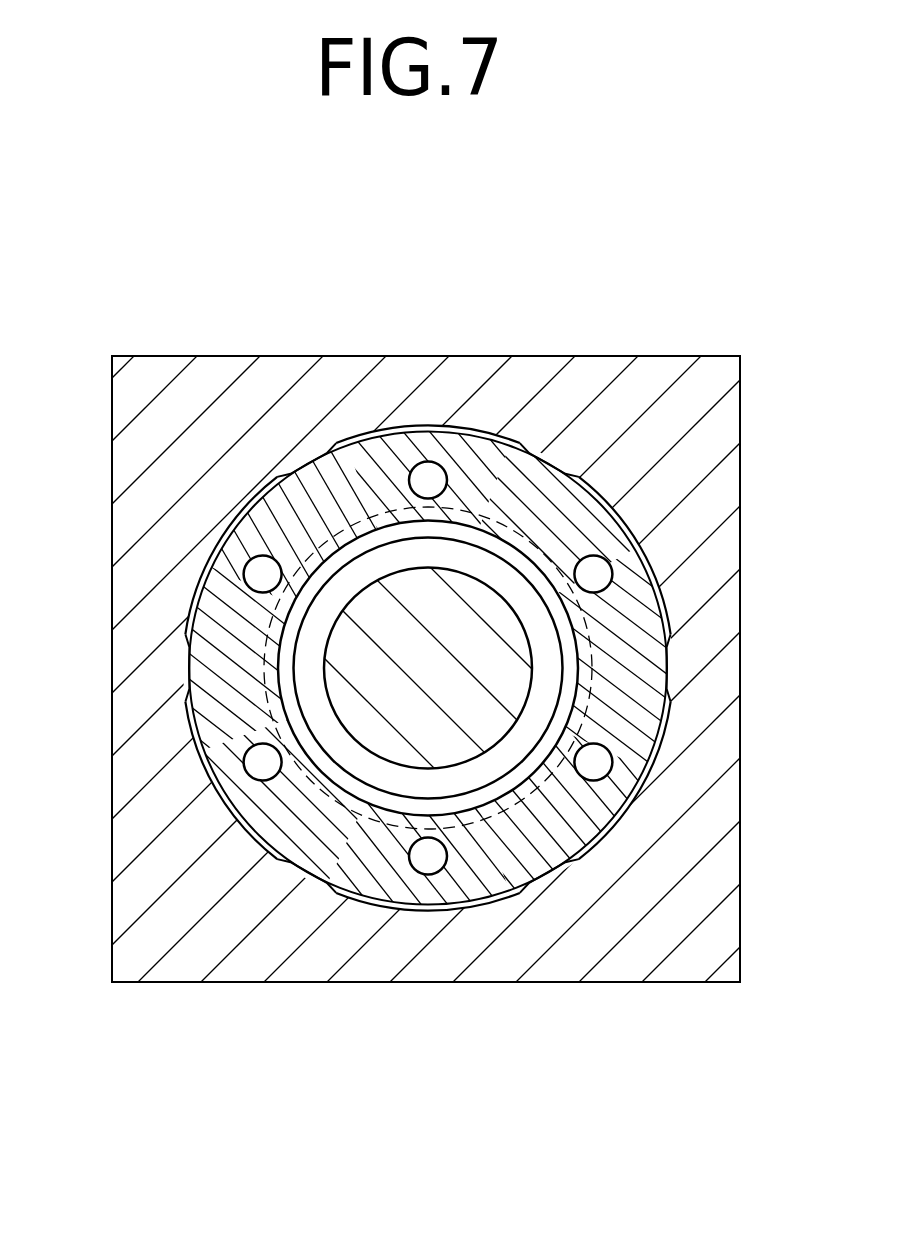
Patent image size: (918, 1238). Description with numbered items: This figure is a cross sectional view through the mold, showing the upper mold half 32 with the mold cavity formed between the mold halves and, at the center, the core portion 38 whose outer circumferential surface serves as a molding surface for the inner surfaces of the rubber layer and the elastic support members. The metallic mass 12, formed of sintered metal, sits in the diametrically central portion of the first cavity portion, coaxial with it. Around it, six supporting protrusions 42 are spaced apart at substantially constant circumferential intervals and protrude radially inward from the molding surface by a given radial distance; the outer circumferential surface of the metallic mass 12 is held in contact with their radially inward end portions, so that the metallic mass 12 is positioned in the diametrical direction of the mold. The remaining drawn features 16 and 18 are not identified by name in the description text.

The metallic mass 12 is at (587, 520).
The bolt holes 16 is at (423, 478).
The seal groove (bolt circle) 18 is at (605, 828).
The upper mold half 32 is at (674, 378).
The core portion 38 is at (365, 603).
The supporting protrusions 42 is at (315, 450).